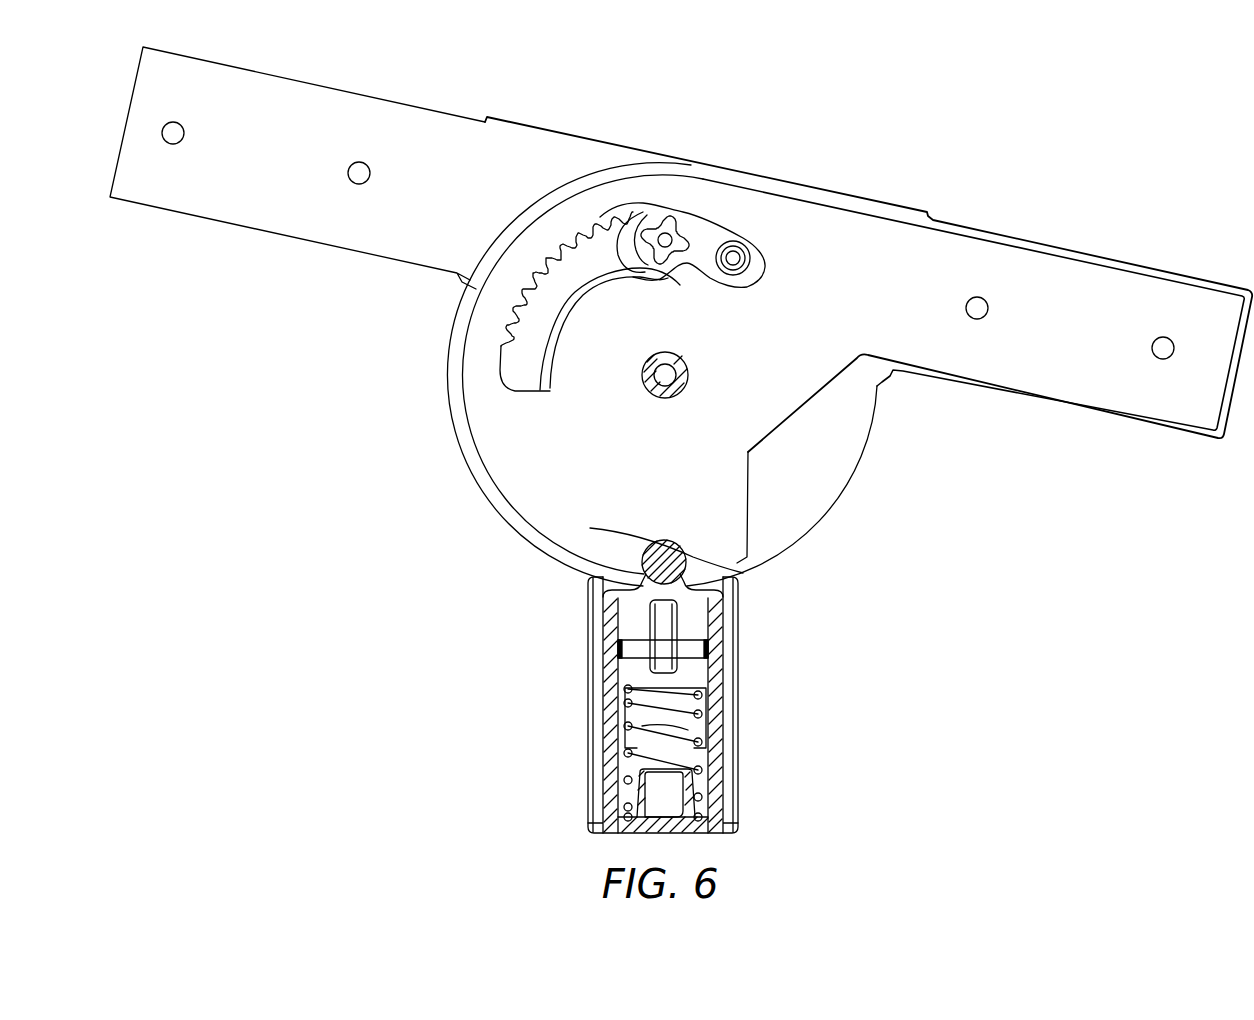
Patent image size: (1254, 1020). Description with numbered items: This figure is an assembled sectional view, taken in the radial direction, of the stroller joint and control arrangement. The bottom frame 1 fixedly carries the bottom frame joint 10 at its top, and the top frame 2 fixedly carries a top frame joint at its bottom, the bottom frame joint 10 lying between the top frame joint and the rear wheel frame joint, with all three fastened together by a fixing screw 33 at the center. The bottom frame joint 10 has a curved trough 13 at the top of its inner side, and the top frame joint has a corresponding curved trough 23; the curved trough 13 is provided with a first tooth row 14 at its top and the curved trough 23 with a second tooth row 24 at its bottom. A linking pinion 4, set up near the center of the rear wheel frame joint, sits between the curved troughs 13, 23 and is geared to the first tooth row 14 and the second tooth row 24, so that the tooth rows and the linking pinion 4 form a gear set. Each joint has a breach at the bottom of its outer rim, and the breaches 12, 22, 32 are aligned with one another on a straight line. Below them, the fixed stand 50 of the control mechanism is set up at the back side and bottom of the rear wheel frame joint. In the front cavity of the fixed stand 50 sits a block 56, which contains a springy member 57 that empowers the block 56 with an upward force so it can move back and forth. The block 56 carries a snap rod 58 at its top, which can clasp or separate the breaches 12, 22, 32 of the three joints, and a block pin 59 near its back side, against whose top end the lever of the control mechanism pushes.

The bottom frame 1 is at (1065, 285).
The top frame 2 is at (275, 198).
The linking pinion 4 is at (662, 223).
The bottom frame joint 10 is at (848, 410).
The breach 12 is at (545, 374).
The breach 22 is at (545, 374).
The breach 32 is at (590, 528).
The curved trough 13 is at (590, 236).
The curved trough 23 is at (563, 257).
The first tooth row 14 is at (682, 197).
The second tooth row 24 is at (627, 217).
The fixing screw 33 is at (678, 388).
The fixed stand 50 is at (733, 713).
The block 56 is at (686, 586).
The springy member 57 is at (702, 770).
The snap rod 58 is at (664, 562).
The block pin 59 is at (627, 648).